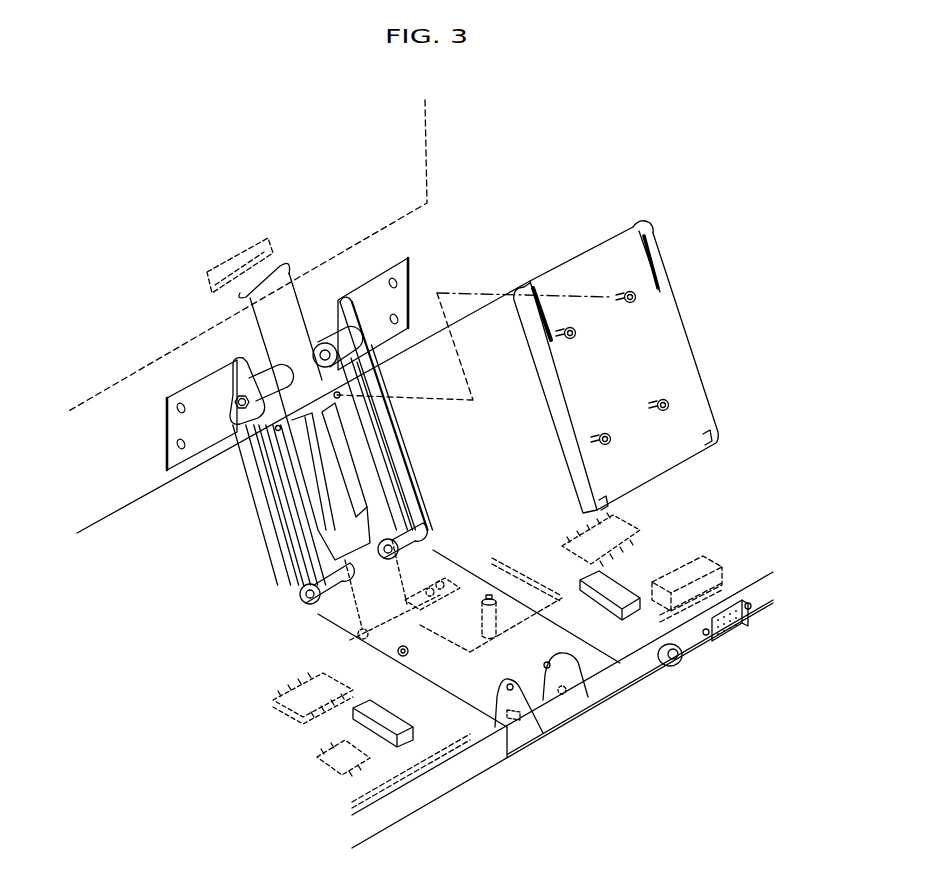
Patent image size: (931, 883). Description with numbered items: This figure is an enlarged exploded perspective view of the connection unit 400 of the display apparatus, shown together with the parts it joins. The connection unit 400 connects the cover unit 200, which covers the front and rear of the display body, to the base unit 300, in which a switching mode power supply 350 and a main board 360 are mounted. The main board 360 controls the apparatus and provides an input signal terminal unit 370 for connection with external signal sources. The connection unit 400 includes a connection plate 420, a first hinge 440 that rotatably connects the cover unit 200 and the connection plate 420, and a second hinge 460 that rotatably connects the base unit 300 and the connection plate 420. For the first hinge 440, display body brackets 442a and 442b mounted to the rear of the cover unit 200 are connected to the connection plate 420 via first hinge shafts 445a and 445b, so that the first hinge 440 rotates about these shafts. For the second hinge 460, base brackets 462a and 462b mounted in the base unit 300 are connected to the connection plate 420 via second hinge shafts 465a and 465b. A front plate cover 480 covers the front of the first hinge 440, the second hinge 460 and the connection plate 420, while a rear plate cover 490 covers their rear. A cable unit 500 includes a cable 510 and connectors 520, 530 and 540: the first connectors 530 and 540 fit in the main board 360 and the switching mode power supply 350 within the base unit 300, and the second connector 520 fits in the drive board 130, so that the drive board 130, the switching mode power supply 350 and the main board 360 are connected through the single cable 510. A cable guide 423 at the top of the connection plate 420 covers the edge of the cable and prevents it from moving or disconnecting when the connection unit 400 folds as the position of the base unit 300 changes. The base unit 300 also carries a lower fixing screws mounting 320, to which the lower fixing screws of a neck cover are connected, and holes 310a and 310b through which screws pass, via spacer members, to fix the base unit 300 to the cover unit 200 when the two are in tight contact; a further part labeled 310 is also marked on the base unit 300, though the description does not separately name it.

The drive board 130 is at (432, 152).
The cover unit 200 is at (118, 522).
The base unit 300 is at (500, 772).
The printed circuit board 310 is at (583, 660).
The hole 310a is at (520, 680).
The hole 310b is at (555, 652).
The lower fixing screws mounting 320 is at (488, 598).
The switching mode power supply (SMPS) 350 is at (380, 772).
The main board 360 is at (702, 565).
The input signal terminal unit 370 is at (740, 623).
The connection unit 400 is at (252, 537).
The connection plate 420 is at (313, 513).
The cable guide 423 is at (338, 447).
The first hinge 440 is at (244, 420).
The display body bracket 442a is at (170, 434).
The display body bracket 442b is at (400, 292).
The first hinge shaft 445a is at (245, 405).
The first hinge shaft 445b is at (335, 358).
The second hinge 460 is at (310, 617).
The base bracket 462a is at (363, 632).
The base bracket 462b is at (425, 585).
The second hinge shaft 465a is at (300, 598).
The second hinge shaft 465b is at (385, 545).
The front plate cover 480 is at (681, 345).
The rear plate cover 490 is at (386, 408).
The cable unit 500 is at (340, 480).
The cable 510 is at (521, 650).
The second connector 520 is at (222, 282).
The first connector 530 is at (387, 720).
The first connector 540 is at (690, 660).